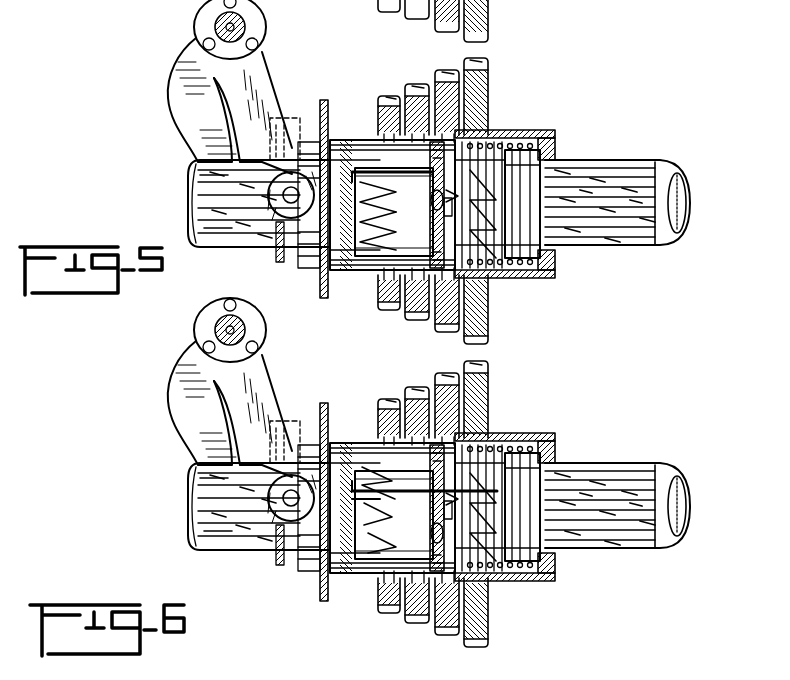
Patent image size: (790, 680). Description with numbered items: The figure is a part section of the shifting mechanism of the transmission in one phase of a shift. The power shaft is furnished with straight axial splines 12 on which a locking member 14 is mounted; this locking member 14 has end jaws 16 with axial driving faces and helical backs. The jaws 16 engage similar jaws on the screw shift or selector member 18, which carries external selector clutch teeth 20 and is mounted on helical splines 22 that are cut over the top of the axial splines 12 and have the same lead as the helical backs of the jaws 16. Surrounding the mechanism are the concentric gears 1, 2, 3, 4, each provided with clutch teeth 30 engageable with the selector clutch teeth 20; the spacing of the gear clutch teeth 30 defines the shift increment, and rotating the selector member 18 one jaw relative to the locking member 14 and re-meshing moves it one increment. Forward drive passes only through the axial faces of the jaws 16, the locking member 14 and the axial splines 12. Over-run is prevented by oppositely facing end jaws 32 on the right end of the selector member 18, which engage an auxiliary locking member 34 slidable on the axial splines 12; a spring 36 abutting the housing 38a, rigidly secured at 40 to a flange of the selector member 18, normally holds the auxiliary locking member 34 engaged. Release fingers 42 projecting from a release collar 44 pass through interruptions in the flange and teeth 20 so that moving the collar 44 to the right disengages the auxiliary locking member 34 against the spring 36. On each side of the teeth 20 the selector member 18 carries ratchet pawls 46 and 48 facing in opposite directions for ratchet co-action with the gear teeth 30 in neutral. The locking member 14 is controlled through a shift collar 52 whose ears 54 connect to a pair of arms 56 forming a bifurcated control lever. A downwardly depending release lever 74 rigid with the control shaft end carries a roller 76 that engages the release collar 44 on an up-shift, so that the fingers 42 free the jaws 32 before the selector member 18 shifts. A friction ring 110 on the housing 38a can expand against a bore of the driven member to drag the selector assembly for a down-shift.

In FIG. 5, the first speed gear 1 is at (389, 115).
In FIG. 6, the first speed gear 1 is at (389, 418).
In FIG. 5, the second speed gear 2 is at (417, 109).
In FIG. 6, the second speed gear 2 is at (417, 412).
In FIG. 5, the third speed gear 3 is at (447, 102).
In FIG. 6, the third speed gear 3 is at (447, 405).
In FIG. 5, the fourth speed gear 4 is at (476, 96).
In FIG. 6, the fourth speed gear 4 is at (476, 399).
In FIG. 5, the axial splines 12 is at (664, 160).
In FIG. 6, the axial splines 12 is at (624, 490).
In FIG. 5, the locking member 14 is at (308, 272).
In FIG. 6, the locking member 14 is at (259, 522).
In FIG. 5, the end jaws 16 is at (380, 226).
In FIG. 6, the end jaws 16 is at (378, 535).
In FIG. 5, the screw shift selector member 18 is at (376, 198).
In FIG. 6, the screw shift selector member 18 is at (391, 496).
In FIG. 5, the selector clutch teeth 20 is at (434, 184).
In FIG. 6, the selector clutch teeth 20 is at (446, 508).
In FIG. 5, the helical splines 22 is at (590, 158).
In FIG. 6, the helical splines 22 is at (600, 487).
In FIG. 5, the gear clutch teeth 30 is at (360, 146).
In FIG. 6, the gear clutch teeth 30 is at (392, 490).
In FIG. 5, the anti-over-run end jaws 32 is at (490, 126).
In FIG. 6, the anti-over-run end jaws 32 is at (505, 425).
In FIG. 5, the auxiliary locking member 34 is at (518, 148).
In FIG. 6, the auxiliary locking member 34 is at (535, 477).
In FIG. 5, the spring 36 is at (532, 268).
In FIG. 6, the spring 36 is at (520, 531).
In FIG. 5, the spring housing 38a is at (545, 128).
In FIG. 6, the spring housing 38a is at (572, 432).
In FIG. 5, the housing securing point 40 is at (480, 280).
In FIG. 6, the housing securing point 40 is at (505, 590).
In FIG. 5, the release fingers 42 is at (358, 166).
In FIG. 6, the release fingers 42 is at (411, 485).
In FIG. 5, the release collar 44 is at (326, 104).
In FIG. 6, the release collar 44 is at (338, 487).
In FIG. 5, the ratchet pawl 46 is at (442, 224).
In FIG. 6, the ratchet pawl 46 is at (444, 511).
In FIG. 5, the ratchet pawl 48 is at (428, 208).
In FIG. 6, the ratchet pawl 48 is at (442, 536).
In FIG. 5, the shift collar 52 is at (290, 112).
In FIG. 6, the shift collar 52 is at (290, 419).
In FIG. 5, the ears 54 is at (248, 242).
In FIG. 6, the ears 54 is at (224, 521).
In FIG. 5, the control lever arms 56 is at (176, 96).
In FIG. 6, the control lever arms 56 is at (186, 403).
In FIG. 5, the release lever 74 is at (266, 55).
In FIG. 6, the release lever 74 is at (249, 387).
In FIG. 5, the roller 76 is at (314, 194).
In FIG. 6, the roller 76 is at (307, 499).
In FIG. 5, the friction ring 110 is at (548, 272).
In FIG. 6, the friction ring 110 is at (587, 580).